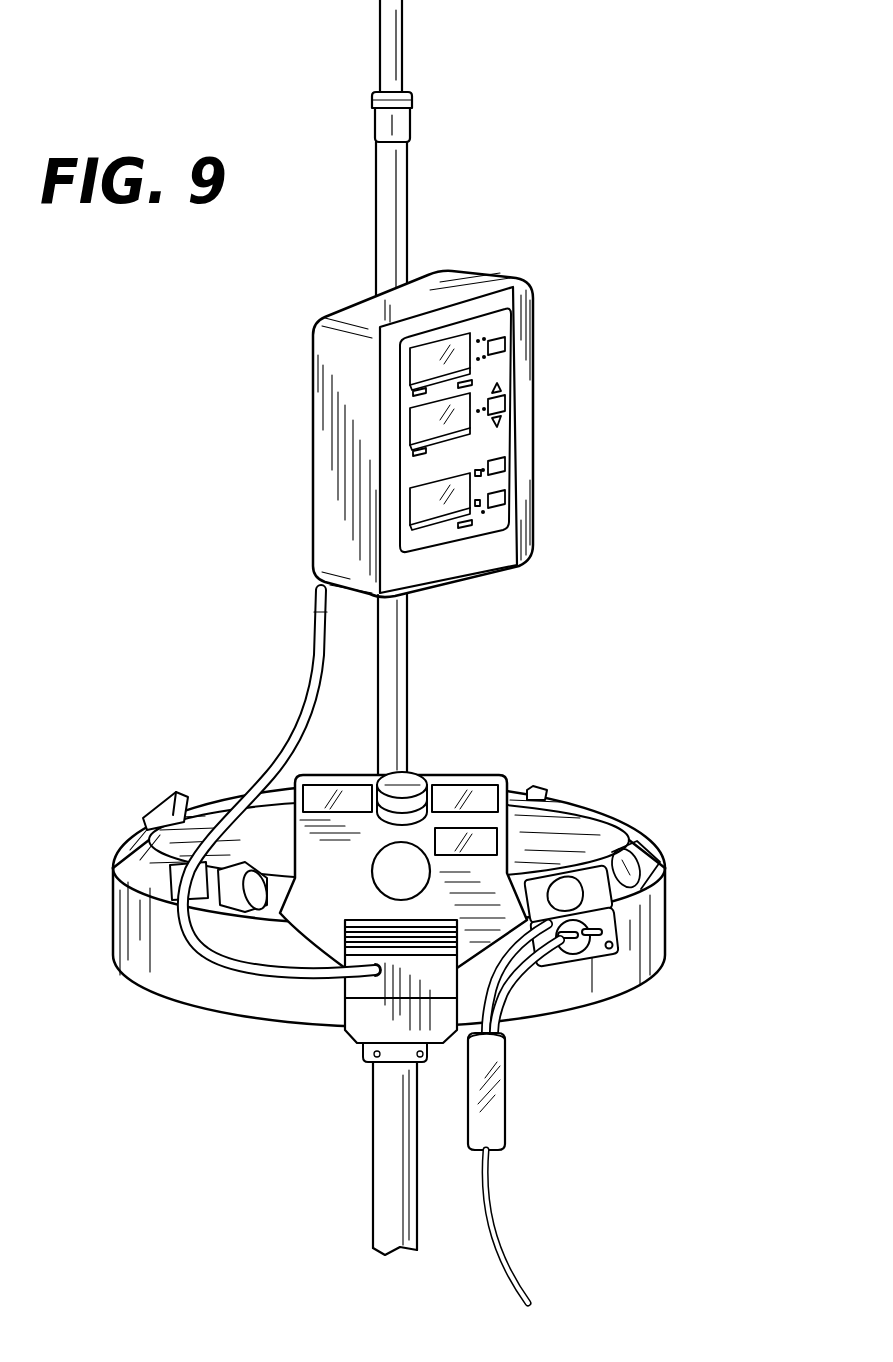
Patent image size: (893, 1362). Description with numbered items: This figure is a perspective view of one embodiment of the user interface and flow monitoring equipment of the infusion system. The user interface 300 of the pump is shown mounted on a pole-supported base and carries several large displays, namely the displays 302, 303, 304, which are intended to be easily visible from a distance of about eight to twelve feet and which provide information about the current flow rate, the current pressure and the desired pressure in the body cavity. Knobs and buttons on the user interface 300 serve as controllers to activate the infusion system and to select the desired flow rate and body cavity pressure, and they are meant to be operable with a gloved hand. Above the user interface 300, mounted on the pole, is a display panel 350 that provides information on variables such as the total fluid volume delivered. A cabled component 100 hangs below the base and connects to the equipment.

The control unit 350 is at (578, 421).
The base unit 300 is at (401, 957).
The display window 302 is at (455, 795).
The display window 303 is at (330, 792).
The display window 304 is at (487, 840).
The sensor cable connector 100 is at (497, 1117).